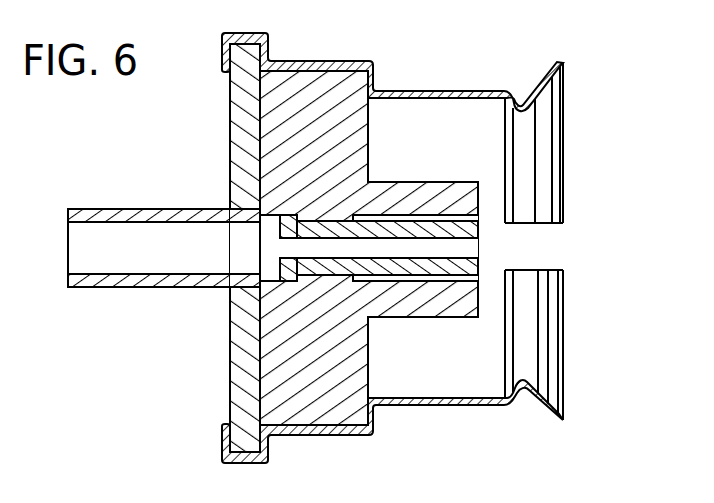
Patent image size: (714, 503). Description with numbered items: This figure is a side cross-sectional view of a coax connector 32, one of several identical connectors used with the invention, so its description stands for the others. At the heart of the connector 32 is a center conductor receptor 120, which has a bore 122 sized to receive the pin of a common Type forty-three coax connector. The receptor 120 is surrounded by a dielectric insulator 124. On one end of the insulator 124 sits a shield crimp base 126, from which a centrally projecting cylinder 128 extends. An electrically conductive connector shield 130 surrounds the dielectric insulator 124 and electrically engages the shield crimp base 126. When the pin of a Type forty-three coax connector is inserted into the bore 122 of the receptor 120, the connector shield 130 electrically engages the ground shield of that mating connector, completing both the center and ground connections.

The connector 32 is at (347, 231).
The center conductor receptor 120 is at (478, 258).
The bore 122 is at (478, 240).
The dielectric insulator 124 is at (362, 138).
The shield crimp base 126 is at (241, 126).
The centrally projecting cylinder 128 is at (101, 208).
The connector shield 130 is at (449, 90).